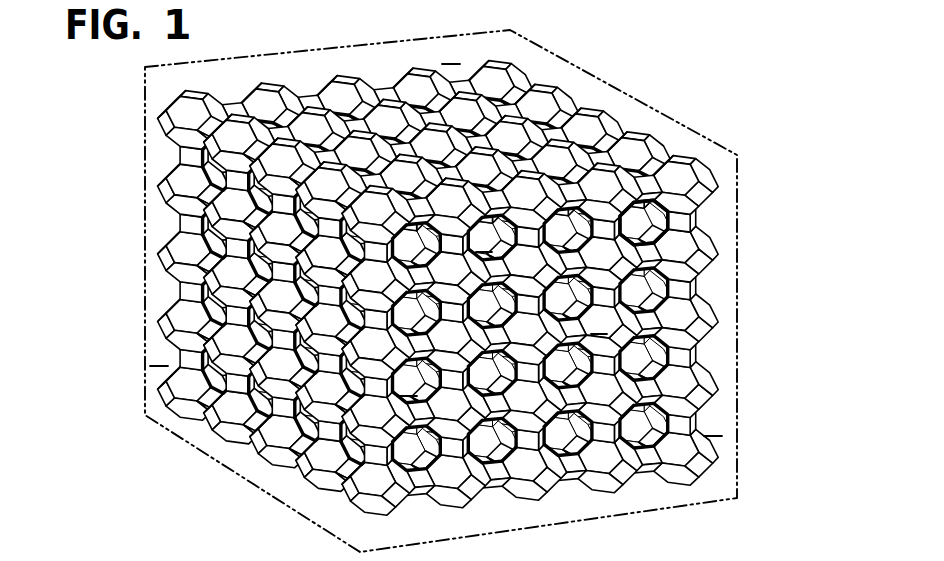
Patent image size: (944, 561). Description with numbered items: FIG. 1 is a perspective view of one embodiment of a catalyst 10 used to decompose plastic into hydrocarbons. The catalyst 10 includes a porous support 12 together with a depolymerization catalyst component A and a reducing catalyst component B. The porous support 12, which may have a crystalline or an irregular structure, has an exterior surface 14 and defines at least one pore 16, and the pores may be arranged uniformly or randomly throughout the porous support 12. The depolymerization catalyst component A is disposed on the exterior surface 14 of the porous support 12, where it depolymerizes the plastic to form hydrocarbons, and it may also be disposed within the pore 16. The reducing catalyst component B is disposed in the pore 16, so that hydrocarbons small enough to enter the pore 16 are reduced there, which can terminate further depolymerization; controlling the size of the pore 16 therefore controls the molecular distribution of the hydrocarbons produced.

The catalyst 10 is at (755, 71).
The porous support 12 is at (539, 76).
The exterior surface 14 is at (168, 190).
The pore 16 is at (684, 226).